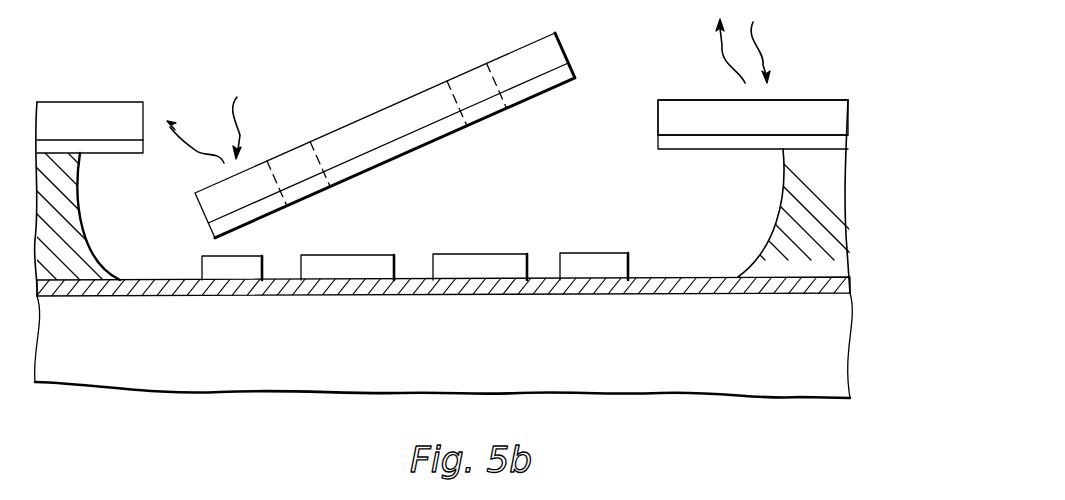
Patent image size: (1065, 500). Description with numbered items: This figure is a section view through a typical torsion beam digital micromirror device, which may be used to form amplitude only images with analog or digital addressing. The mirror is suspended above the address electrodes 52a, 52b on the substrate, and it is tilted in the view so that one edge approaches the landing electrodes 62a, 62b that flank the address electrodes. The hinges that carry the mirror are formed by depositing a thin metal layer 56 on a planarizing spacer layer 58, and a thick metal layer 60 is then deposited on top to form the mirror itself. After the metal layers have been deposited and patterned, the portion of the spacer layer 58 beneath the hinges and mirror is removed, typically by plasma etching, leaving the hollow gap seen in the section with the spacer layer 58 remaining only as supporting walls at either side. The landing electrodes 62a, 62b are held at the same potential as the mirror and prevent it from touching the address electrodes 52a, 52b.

The address electrode 52a is at (372, 262).
The address electrode 52b is at (510, 262).
The thin metal layer 56 is at (840, 143).
The planarizing spacer layer 58 is at (835, 220).
The thick metal layer 60 is at (813, 110).
The landing electrode 62a is at (210, 273).
The landing electrode 62b is at (610, 257).